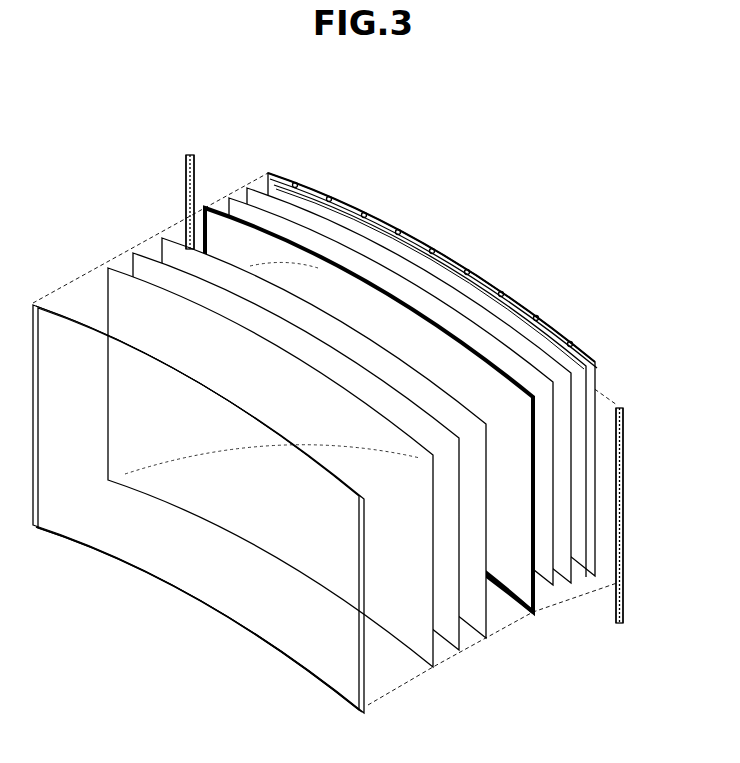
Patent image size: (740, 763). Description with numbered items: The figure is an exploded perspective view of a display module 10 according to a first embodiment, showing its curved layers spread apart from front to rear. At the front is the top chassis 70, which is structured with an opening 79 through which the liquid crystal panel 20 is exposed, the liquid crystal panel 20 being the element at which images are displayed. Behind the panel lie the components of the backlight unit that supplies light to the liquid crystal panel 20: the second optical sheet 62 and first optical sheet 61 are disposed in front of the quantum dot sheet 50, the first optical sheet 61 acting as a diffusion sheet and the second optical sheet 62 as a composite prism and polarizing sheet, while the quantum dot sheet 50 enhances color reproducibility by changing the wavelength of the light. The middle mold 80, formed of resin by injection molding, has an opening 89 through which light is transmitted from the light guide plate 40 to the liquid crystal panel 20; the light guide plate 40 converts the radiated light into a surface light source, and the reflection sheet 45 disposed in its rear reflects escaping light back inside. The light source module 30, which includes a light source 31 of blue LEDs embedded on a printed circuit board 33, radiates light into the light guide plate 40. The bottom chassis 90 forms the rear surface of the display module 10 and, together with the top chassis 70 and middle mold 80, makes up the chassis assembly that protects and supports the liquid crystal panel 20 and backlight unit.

The display module 10 is at (397, 162).
The liquid crystal panel 20 is at (428, 663).
The light source module 30 is at (207, 113).
The light source 31 is at (187, 155).
The printed circuit board 33 is at (193, 155).
The light guide plate 40 is at (578, 583).
The reflection sheet 45 is at (565, 348).
The quantum dot sheet 50 is at (553, 585).
The first optical sheet 61 is at (456, 650).
The second optical sheet 62 is at (478, 630).
The top chassis 70 is at (367, 703).
The opening 79 is at (223, 608).
The middle mold 80 is at (535, 613).
The opening 89 is at (505, 592).
The bottom chassis 90 is at (458, 263).